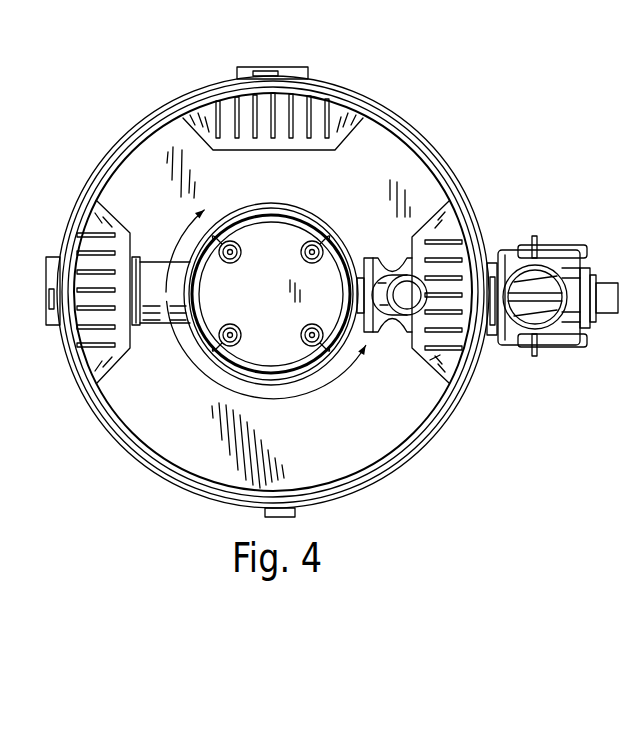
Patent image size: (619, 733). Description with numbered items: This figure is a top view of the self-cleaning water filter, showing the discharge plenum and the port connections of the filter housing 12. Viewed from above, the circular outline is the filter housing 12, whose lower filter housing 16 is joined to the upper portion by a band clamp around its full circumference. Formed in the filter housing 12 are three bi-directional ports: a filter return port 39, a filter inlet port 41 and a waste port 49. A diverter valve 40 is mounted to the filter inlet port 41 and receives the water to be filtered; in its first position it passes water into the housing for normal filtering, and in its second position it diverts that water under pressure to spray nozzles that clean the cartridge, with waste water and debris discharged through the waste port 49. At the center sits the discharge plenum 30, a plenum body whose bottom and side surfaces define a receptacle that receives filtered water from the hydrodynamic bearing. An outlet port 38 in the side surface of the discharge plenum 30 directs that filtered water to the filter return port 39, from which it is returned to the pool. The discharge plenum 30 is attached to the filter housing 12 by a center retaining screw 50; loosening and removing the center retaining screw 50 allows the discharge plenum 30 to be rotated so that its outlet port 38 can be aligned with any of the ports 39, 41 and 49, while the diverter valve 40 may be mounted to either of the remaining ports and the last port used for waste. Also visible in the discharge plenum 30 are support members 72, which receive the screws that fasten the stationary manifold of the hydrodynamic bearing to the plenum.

The filter housing 12 is at (150, 490).
The lower filter housing 16 is at (403, 467).
The discharge plenum 30 is at (332, 217).
The outlet port 38 is at (165, 257).
The filter return port 39 is at (45, 333).
The diverter valve 40 is at (568, 240).
The filter inlet port 41 is at (490, 340).
The waste port 49 is at (316, 79).
The center retaining screw 50 is at (272, 293).
The support members 72 is at (301, 335).